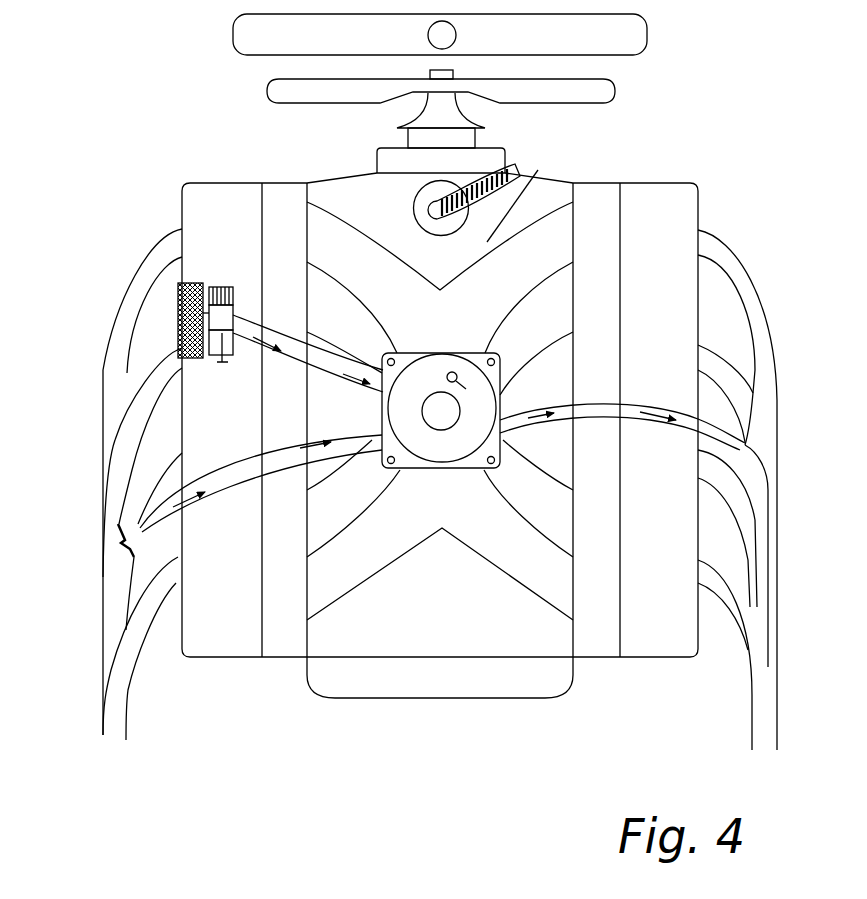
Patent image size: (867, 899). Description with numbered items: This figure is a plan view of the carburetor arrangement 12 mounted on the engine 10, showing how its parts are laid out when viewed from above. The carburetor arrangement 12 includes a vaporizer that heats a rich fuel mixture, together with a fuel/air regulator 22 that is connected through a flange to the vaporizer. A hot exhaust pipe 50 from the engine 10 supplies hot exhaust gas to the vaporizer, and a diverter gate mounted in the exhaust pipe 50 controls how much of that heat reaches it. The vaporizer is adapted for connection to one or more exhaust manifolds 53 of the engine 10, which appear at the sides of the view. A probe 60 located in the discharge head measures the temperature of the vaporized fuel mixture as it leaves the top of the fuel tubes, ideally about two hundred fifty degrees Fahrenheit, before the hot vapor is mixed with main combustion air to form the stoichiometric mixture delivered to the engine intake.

The engine 10 is at (454, 617).
The carburetor arrangement 12 is at (477, 412).
The fuel/air regulator 22 is at (221, 288).
The hot exhaust pipe 50 is at (228, 490).
The exhaust manifolds 53 is at (120, 291).
The probe 60 is at (448, 372).